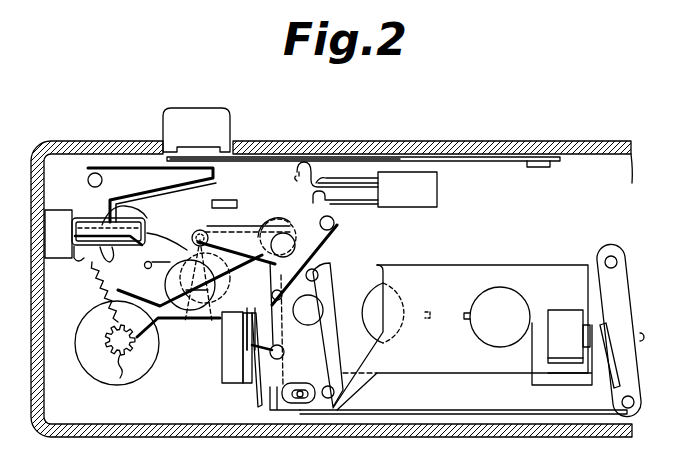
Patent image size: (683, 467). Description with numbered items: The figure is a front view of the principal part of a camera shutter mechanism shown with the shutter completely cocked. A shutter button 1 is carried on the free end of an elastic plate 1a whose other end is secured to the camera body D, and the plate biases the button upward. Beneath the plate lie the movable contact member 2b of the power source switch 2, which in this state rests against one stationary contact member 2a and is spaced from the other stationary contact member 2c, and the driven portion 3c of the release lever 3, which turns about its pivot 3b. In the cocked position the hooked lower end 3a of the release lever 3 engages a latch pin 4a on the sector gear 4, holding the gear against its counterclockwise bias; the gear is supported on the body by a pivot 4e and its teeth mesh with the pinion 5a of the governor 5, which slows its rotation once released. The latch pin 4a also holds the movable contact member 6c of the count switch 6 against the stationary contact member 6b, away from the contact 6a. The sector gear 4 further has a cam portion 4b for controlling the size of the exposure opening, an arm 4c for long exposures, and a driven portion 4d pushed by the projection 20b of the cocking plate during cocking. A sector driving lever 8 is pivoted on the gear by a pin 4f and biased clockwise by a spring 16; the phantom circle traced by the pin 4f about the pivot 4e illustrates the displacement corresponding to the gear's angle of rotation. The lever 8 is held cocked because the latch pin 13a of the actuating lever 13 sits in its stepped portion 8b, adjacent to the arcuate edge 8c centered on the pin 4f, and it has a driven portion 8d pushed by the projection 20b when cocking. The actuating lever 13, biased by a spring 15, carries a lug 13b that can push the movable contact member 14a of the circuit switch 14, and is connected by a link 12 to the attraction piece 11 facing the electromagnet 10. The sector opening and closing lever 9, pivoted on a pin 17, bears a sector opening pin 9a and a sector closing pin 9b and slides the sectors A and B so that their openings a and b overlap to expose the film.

The shutter button 1 is at (213, 108).
The elastic plate 1a is at (250, 152).
The power source switch 2 is at (437, 190).
The stationary contact member 2a is at (348, 178).
The movable contact member 2b is at (300, 181).
The stationary contact member 2c is at (358, 204).
The release lever 3 is at (168, 180).
The hooked lower end 3a is at (98, 284).
The pivot 3b is at (88, 176).
The driven portion 3c is at (204, 166).
The sector gear 4 is at (155, 320).
The latch pin 4a is at (108, 262).
The cam portion 4b is at (245, 348).
The arm 4c is at (258, 320).
The driven portion 4d is at (287, 220).
The pivot 4e is at (198, 226).
The pin 4f is at (178, 270).
The governor 5 is at (82, 327).
The pinion 5a is at (120, 378).
The count switch 6 is at (45, 230).
The contact 6a is at (90, 217).
The stationary contact member 6b is at (72, 222).
The movable contact member 6c is at (74, 262).
The sector driving lever 8 is at (160, 294).
The stepped portion 8b is at (222, 262).
The arcuate edge 8c is at (157, 237).
The driven portion 8d is at (120, 213).
The sector opening and closing lever 9 is at (332, 326).
The sector opening pin 9a is at (319, 276).
The sector closing pin 9b is at (298, 362).
The electromagnet 10 is at (565, 317).
The attraction piece 11 is at (628, 297).
The link 12 is at (480, 410).
The actuating lever 13 is at (290, 346).
The latch pin 13a is at (216, 224).
The lug 13b is at (270, 410).
The circuit switch 14 is at (222, 372).
The movable contact member 14a is at (256, 402).
The spring 15 is at (318, 230).
The spring 16 is at (121, 329).
The pin 17 is at (316, 308).
The projection 20b is at (233, 200).
The sector A is at (367, 270).
The opening a is at (397, 282).
The sector B is at (545, 272).
The opening b is at (497, 286).
The camera body D is at (466, 144).